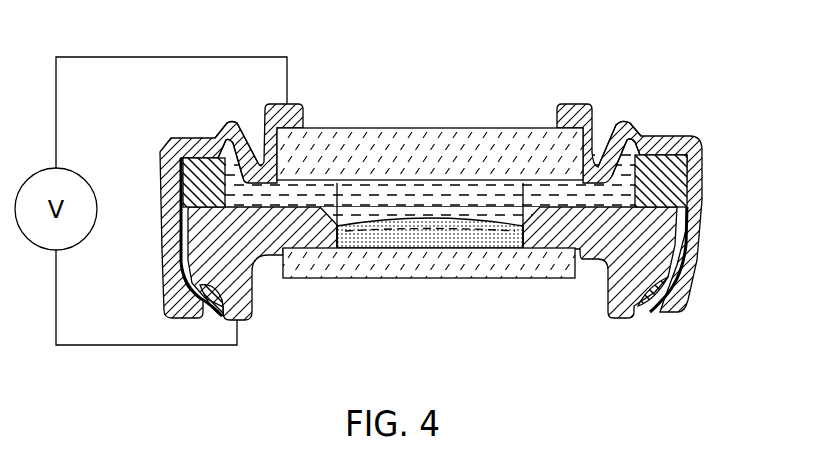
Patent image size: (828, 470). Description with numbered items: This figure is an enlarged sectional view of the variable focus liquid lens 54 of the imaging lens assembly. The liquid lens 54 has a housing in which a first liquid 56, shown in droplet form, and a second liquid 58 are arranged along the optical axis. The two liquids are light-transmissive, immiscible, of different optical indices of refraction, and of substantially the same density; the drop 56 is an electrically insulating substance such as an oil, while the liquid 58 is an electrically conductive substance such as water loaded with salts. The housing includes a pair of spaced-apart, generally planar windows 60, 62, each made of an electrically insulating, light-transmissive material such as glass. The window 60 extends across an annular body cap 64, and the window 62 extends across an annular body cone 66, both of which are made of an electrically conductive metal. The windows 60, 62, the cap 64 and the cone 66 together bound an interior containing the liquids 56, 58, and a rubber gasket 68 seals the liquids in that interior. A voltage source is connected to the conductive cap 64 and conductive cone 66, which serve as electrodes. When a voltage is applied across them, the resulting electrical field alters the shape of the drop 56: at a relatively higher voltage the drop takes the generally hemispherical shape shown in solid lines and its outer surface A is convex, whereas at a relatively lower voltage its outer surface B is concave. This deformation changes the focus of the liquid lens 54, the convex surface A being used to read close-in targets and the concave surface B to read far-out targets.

The variable focus liquid lens 54 is at (668, 50).
The first liquid 56 is at (482, 226).
The second liquid 58 is at (670, 212).
The window 60 is at (430, 140).
The window 62 is at (428, 272).
The annular body cap 64 is at (669, 140).
The annular body cone 66 is at (621, 319).
The rubber gasket 68 is at (187, 188).
The convex outer surface A is at (417, 217).
The concave outer surface B is at (415, 238).